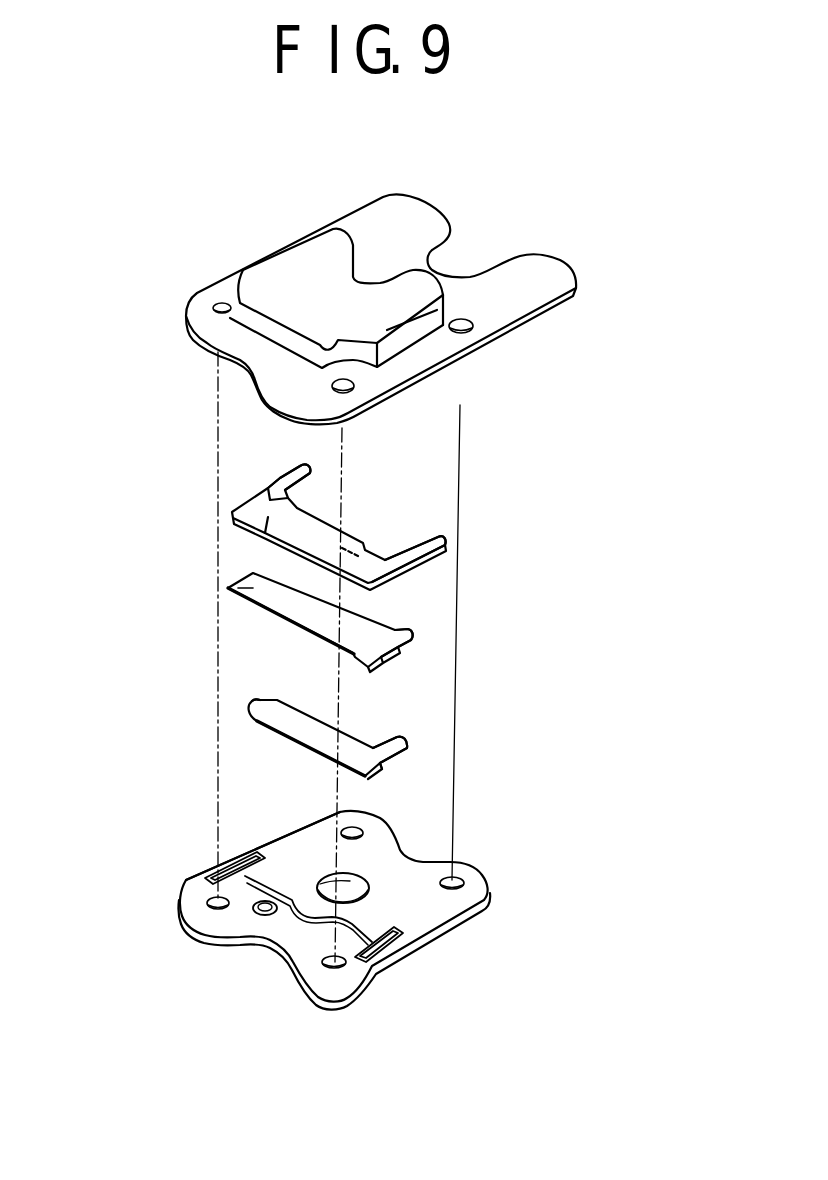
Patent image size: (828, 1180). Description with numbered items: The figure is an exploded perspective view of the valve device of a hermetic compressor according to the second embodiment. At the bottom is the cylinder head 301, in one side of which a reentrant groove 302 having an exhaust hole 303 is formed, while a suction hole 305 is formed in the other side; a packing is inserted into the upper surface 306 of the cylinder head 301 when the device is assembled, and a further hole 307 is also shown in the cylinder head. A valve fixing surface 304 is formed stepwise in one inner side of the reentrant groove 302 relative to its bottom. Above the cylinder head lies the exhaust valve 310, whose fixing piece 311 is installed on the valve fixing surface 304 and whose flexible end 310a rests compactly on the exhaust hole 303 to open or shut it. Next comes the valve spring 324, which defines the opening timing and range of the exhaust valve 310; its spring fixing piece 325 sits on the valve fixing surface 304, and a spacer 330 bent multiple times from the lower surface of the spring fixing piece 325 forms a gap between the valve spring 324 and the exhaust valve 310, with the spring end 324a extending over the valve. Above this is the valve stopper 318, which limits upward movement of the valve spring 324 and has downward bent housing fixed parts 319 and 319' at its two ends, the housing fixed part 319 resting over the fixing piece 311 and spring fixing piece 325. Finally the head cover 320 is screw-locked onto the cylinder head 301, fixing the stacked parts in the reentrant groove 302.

The head cover 320 is at (575, 270).
The valve stopper 318 is at (346, 504).
The housing fixed part 319 is at (439, 500).
The housing fixed part 319' is at (200, 493).
The valve spring 324 is at (356, 599).
The spring fixing piece 325 is at (398, 630).
The projection 324a is at (240, 588).
The spacer 330 is at (330, 690).
The exhaust valve 310 is at (356, 716).
The fixing piece 311 is at (380, 763).
The flexible end 310a is at (262, 718).
The cylinder head 301 is at (360, 903).
The suction hole 305 is at (362, 888).
The upper surface 306 is at (280, 843).
The hole 307 is at (210, 903).
The exhaust hole 303 is at (257, 912).
The reentrant groove 302 is at (300, 932).
The valve fixing surface 304 is at (432, 962).